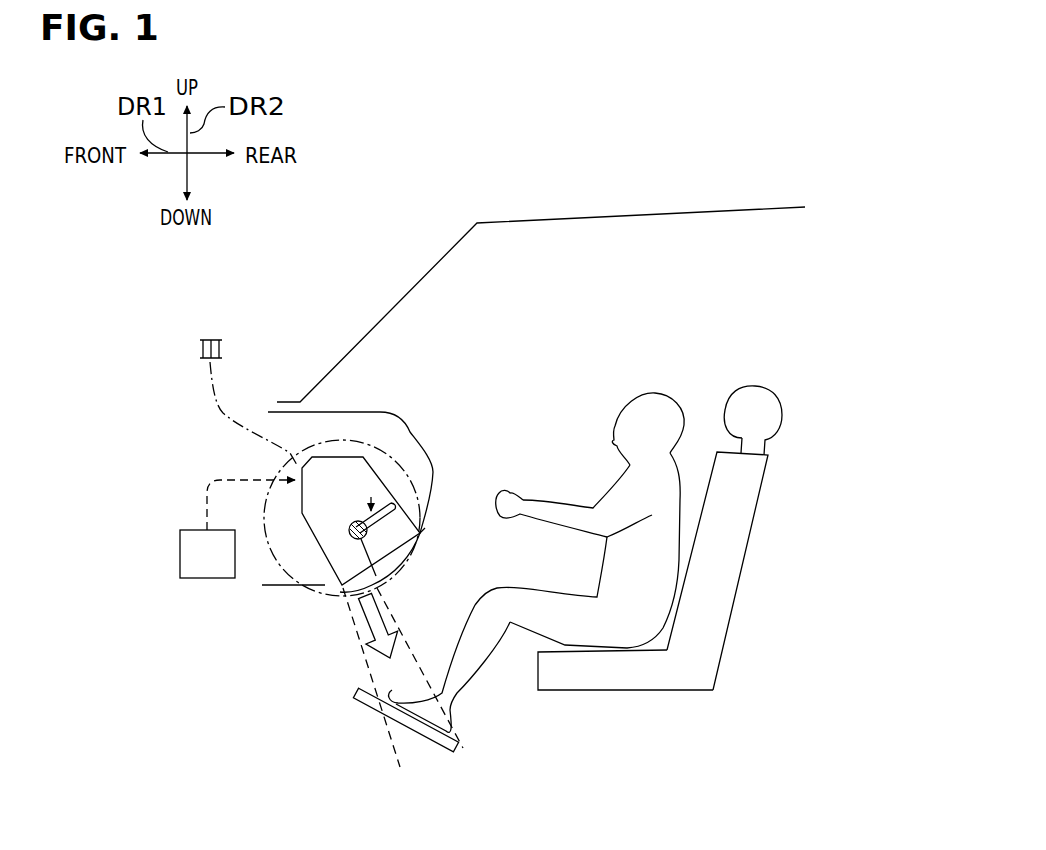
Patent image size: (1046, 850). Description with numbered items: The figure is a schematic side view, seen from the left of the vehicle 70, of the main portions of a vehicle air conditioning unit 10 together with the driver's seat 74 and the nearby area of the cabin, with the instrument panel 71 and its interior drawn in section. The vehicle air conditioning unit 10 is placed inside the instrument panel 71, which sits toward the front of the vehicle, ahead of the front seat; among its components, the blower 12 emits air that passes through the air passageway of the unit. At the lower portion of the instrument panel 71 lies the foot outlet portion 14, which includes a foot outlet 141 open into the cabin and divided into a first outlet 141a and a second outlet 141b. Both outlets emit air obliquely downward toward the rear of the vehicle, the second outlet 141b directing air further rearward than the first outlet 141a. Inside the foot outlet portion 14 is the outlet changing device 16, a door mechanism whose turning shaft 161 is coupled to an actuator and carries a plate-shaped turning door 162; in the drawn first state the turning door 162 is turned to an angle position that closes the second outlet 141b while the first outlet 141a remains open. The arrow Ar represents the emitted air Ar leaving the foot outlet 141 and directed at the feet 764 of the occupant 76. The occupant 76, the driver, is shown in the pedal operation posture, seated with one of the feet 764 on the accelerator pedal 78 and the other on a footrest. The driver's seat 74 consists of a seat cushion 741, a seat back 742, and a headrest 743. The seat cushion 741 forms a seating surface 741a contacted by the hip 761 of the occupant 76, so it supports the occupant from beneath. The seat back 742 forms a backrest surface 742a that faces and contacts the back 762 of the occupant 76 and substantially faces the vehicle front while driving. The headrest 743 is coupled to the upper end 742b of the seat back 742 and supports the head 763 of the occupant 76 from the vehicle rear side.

The vehicle air conditioning unit 10 is at (211, 459).
The blower 12 is at (207, 578).
The foot outlet portion 14 is at (402, 423).
The foot outlet 141 is at (508, 523).
The first outlet 141a is at (400, 578).
The second outlet 141b is at (413, 558).
The outlet changing device 16 is at (367, 470).
The turning shaft 161 is at (350, 583).
The turning door 162 is at (430, 484).
The vehicle 70 is at (499, 219).
The instrument panel 71 is at (283, 407).
The driver's seat 74 is at (710, 521).
The seat cushion 741 is at (558, 682).
The seating surface 741a is at (673, 618).
The seat back 742 is at (737, 550).
The backrest surface 742a is at (715, 452).
The upper end of the seat back 742b is at (770, 450).
The headrest 743 is at (757, 405).
The occupant 76 is at (556, 545).
The hip 761 is at (607, 655).
The back 762 is at (679, 502).
The head 763 is at (657, 413).
The feet 764 is at (383, 672).
The accelerator pedal 78 is at (453, 753).
The emitted air Ar is at (357, 623).